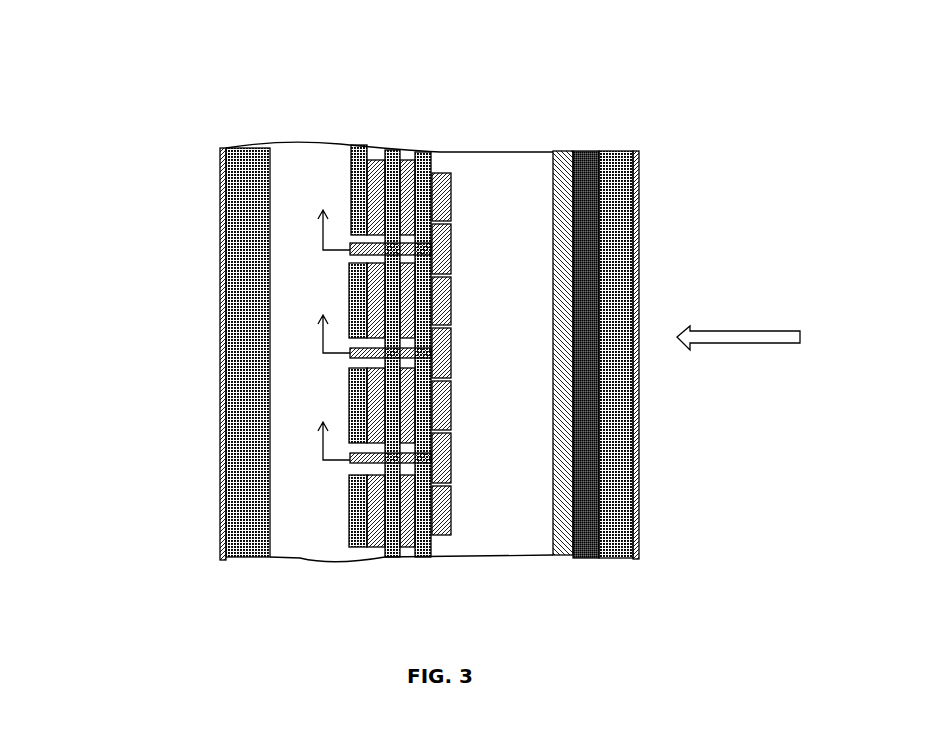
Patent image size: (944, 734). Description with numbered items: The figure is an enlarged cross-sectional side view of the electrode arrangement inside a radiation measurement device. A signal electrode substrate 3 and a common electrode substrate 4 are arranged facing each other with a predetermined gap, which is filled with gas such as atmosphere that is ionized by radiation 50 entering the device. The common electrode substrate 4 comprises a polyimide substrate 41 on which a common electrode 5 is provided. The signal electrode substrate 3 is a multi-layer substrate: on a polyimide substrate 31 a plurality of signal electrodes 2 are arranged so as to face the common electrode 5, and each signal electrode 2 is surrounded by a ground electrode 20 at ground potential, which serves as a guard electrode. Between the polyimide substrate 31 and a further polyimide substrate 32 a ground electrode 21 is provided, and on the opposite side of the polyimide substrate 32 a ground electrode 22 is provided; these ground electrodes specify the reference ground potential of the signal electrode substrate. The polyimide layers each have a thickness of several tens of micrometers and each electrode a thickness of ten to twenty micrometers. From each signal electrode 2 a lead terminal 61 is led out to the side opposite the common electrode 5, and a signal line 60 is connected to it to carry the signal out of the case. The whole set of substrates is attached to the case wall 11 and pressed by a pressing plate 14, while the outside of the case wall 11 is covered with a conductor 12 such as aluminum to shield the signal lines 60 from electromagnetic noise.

The signal electrode substrate 3 is at (330, 60).
The common electrode substrate 4 is at (690, 103).
The common electrode 5 is at (568, 150).
The case wall 11 is at (238, 228).
The conductor 12 is at (224, 400).
The pressing plate 14 is at (357, 200).
The signal electrode 2 is at (452, 243).
The ground electrode 20 is at (452, 178).
The ground electrode 21 is at (405, 153).
The ground electrode 22 is at (300, 315).
The polyimide substrate 31 is at (423, 160).
The polyimide substrate 32 is at (370, 162).
The polyimide substrate 41 is at (588, 190).
The radiation 50 is at (740, 331).
The signal line 60 is at (320, 212).
The lead terminal 61 is at (350, 250).